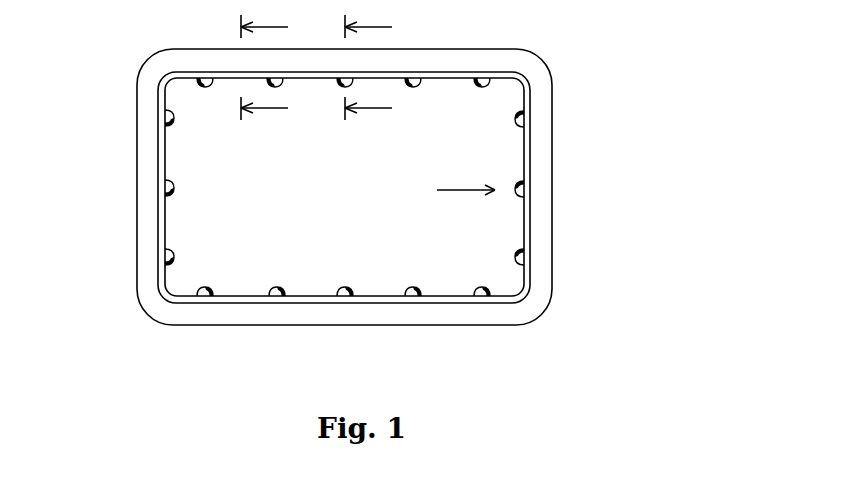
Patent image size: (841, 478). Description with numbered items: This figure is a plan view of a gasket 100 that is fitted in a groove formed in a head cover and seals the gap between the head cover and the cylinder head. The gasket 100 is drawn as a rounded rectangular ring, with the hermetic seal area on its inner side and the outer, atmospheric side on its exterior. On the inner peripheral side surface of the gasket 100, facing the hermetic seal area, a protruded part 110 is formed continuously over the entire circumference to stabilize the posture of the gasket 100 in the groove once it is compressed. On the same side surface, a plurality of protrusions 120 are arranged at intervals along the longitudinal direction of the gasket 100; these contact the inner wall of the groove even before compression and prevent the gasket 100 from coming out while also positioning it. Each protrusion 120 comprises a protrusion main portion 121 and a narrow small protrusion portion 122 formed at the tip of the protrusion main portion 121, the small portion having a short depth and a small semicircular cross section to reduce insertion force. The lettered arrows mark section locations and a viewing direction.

The gasket 100 is at (369, 185).
The protruded part 110 is at (162, 222).
The protrusion 120 is at (344, 222).
The protrusion main portion 121 is at (344, 222).
The small protrusion portion 122 is at (296, 282).